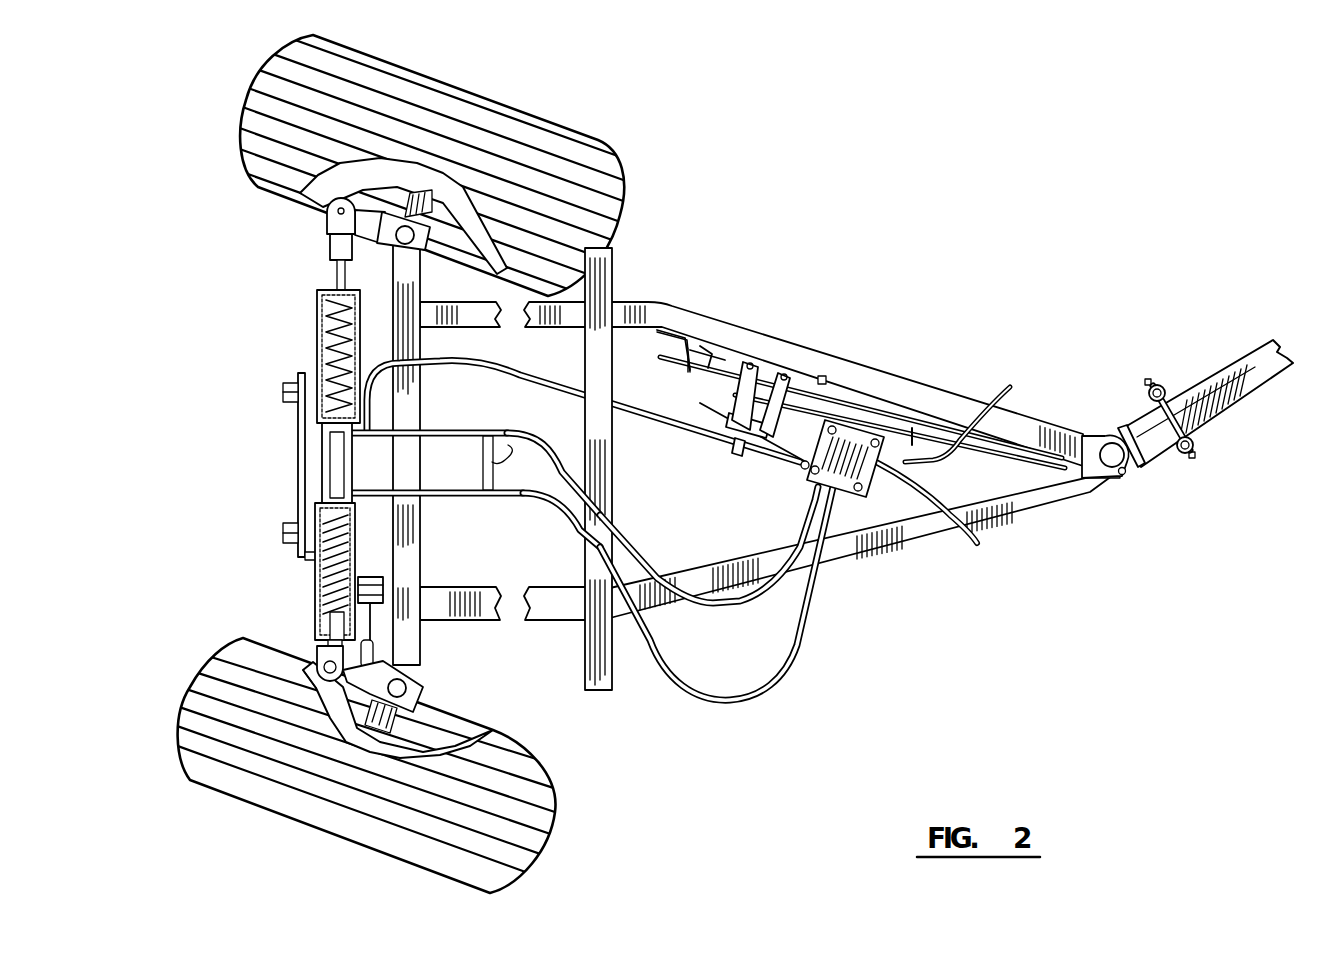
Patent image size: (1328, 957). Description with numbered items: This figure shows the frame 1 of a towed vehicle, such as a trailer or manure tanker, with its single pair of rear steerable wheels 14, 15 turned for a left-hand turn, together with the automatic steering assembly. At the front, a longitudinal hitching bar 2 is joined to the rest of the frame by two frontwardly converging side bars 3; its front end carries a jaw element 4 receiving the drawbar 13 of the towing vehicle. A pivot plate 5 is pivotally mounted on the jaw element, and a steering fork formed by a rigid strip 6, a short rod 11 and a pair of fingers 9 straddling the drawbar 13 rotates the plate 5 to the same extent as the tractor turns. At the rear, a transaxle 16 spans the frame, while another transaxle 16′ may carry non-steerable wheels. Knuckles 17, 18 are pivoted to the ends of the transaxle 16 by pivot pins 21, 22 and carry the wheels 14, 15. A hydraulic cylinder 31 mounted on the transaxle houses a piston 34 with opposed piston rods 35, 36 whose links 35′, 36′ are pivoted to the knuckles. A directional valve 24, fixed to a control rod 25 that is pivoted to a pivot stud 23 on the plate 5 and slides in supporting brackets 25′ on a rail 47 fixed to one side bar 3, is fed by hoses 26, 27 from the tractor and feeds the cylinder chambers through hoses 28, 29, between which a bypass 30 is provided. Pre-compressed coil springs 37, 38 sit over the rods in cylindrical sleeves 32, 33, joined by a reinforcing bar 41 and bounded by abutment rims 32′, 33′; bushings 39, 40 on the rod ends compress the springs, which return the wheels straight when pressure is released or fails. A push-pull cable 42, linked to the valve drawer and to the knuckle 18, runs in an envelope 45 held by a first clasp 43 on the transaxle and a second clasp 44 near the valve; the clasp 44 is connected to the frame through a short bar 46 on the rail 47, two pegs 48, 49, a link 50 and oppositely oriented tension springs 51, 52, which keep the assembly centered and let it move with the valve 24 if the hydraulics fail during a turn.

The frame 1 is at (992, 281).
The hitching bar 2 is at (1086, 433).
The side bars 3 is at (867, 373).
The jaw element 4 is at (1111, 442).
The pivot plate 5 is at (1130, 470).
The rigid strip 6 is at (1146, 440).
The fingers 9 is at (1157, 384).
The short rod 11 is at (1177, 386).
The drawbar 13 is at (1262, 378).
The steerable wheel 14 is at (530, 140).
The steerable wheel 15 is at (500, 784).
The rear transaxle 16 is at (410, 623).
The transaxle 16′ is at (603, 469).
The knuckle 17 is at (369, 224).
The knuckle 18 is at (388, 670).
The pivot pin 21 is at (408, 238).
The pivot pin 22 is at (406, 688).
The pivot stud 23 is at (1122, 480).
The directional valve 24 is at (830, 440).
The control rod 25 is at (937, 433).
The supporting brackets 25′ is at (680, 370).
The hydraulic hose 26 is at (980, 540).
The hydraulic hose 27 is at (1008, 387).
The hydraulic hose 28 is at (797, 667).
The hydraulic hose 29 is at (548, 453).
The bypass 30 is at (510, 433).
The hydraulic cylinder 31 is at (328, 458).
The cylindrical sleeve 32 is at (317, 296).
The spring abutment rims 32′ is at (317, 497).
The cylindrical sleeve 33 is at (318, 571).
The spring abutment rims 33′ is at (318, 634).
The piston 34 is at (338, 443).
The piston rod 35 is at (318, 360).
The link 35′ is at (333, 226).
The piston rod 36 is at (325, 474).
The link 36′ is at (322, 661).
The coil spring 37 is at (320, 337).
The coil spring 38 is at (330, 557).
The bushing 39 is at (330, 250).
The bushing 40 is at (318, 617).
The reinforcing bar 41 is at (297, 421).
The push-pull cable 42 is at (377, 608).
The first attachment clasp 43 is at (383, 584).
The second attachment clasp 44 is at (736, 457).
The envelope 45 is at (547, 373).
The short bar 46 is at (767, 372).
The rail 47 is at (900, 378).
The peg 48 is at (733, 357).
The peg 49 is at (753, 362).
The link 50 is at (728, 408).
The tension spring 51 is at (710, 333).
The tension spring 52 is at (822, 376).